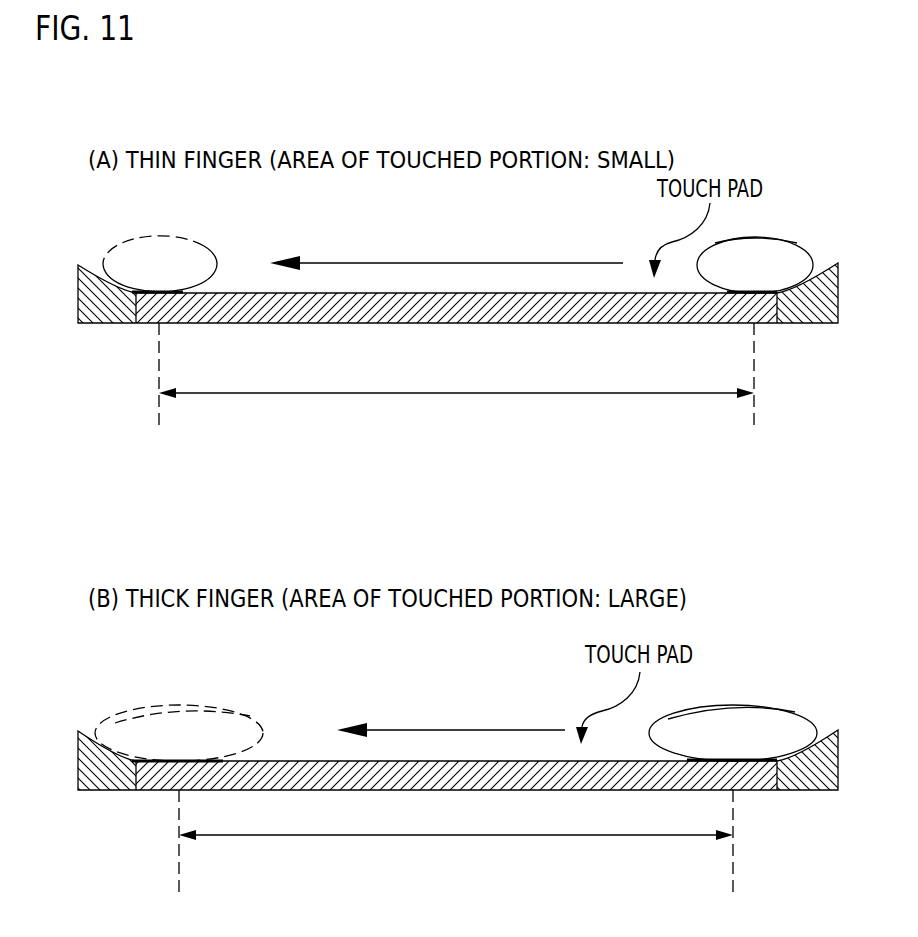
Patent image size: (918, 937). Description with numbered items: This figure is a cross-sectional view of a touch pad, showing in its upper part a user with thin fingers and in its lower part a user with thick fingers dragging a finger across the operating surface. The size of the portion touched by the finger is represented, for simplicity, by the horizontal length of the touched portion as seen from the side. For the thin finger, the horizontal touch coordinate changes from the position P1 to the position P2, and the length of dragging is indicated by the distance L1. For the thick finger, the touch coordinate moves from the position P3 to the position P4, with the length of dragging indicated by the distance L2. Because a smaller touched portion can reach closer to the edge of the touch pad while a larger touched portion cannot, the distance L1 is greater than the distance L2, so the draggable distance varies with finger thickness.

The position P1 is at (754, 394).
The position P2 is at (154, 395).
The position P3 is at (730, 861).
The position P4 is at (175, 861).
The distance L1 is at (456, 381).
The distance L2 is at (456, 853).